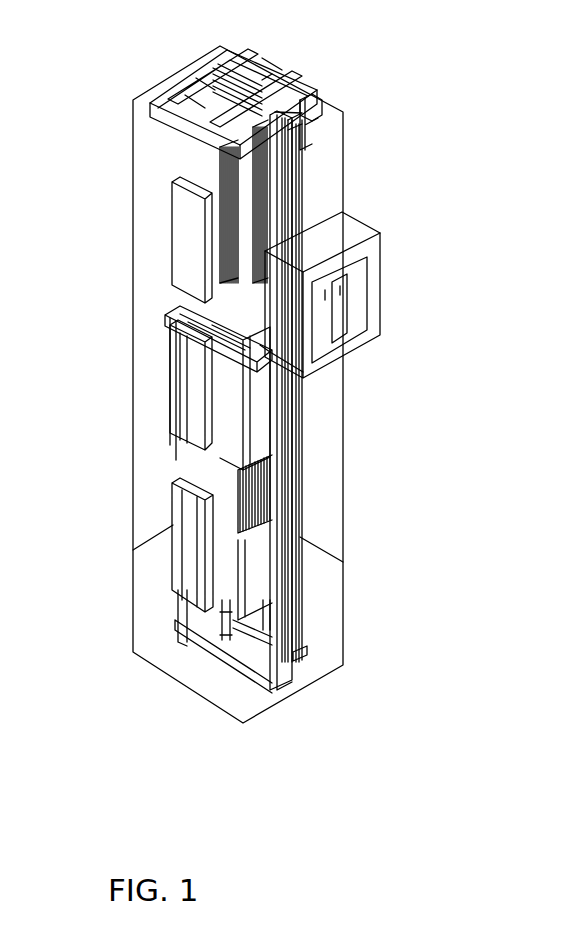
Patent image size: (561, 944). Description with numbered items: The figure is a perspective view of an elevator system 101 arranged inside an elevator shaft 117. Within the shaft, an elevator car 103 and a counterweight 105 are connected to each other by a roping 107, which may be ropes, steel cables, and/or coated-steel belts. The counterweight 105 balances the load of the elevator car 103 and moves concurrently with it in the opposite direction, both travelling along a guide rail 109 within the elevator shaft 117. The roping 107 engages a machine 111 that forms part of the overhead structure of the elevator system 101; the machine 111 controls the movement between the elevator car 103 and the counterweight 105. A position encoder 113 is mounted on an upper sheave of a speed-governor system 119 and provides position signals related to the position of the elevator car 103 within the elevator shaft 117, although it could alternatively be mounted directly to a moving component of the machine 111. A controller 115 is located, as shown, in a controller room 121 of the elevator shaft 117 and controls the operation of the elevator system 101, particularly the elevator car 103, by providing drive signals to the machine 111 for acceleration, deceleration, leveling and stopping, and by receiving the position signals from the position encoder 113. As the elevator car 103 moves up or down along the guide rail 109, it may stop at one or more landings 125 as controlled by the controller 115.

The elevator system 101 is at (372, 63).
The elevator car 103 is at (235, 410).
The counterweight 105 is at (245, 513).
The roping 107 is at (238, 238).
The guide rail 109 is at (287, 468).
The machine 111 is at (185, 100).
The position encoder 113 is at (300, 145).
The controller 115 is at (347, 302).
The elevator shaft 117 is at (176, 477).
The speed-governor system 119 is at (292, 168).
The controller room 121 is at (376, 232).
The landings 125 is at (170, 230).